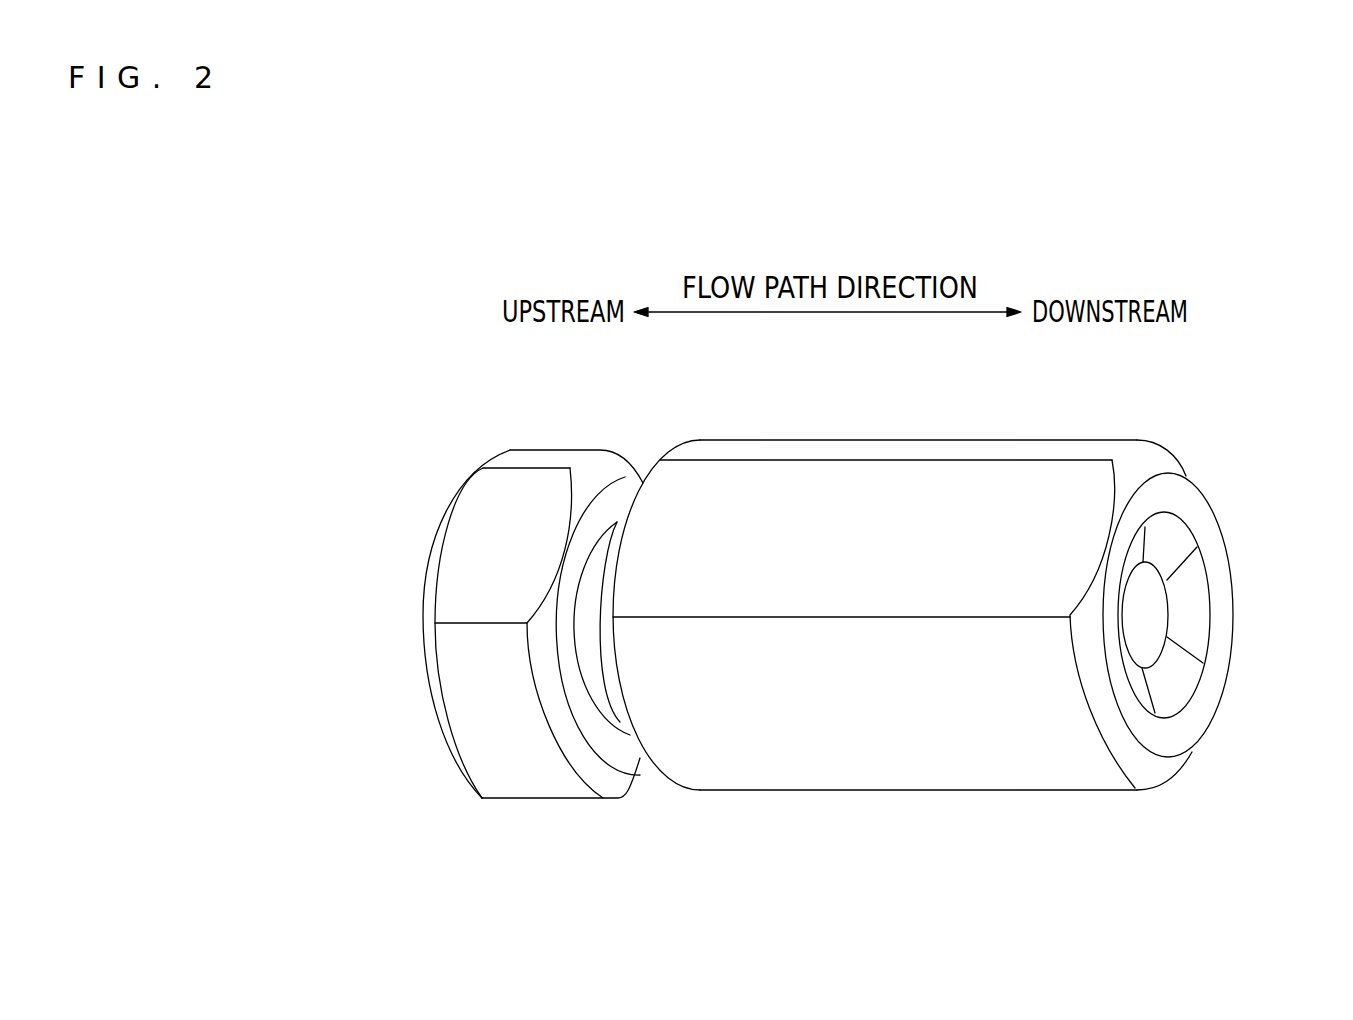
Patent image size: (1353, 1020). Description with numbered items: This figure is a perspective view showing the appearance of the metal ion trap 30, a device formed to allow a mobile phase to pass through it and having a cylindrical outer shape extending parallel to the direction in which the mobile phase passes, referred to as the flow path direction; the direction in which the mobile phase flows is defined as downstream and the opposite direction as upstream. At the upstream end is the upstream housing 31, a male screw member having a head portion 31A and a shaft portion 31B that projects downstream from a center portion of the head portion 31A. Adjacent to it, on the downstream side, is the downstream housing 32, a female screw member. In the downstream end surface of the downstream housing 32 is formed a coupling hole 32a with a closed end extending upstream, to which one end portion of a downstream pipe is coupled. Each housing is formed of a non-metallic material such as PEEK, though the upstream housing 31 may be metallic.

The metal ion trap 30 is at (1290, 328).
The upstream housing 31 is at (610, 875).
The head portion 31A is at (510, 788).
The shaft portion 31B is at (607, 717).
The downstream housing 32 is at (840, 783).
The coupling hole 32a is at (1138, 637).